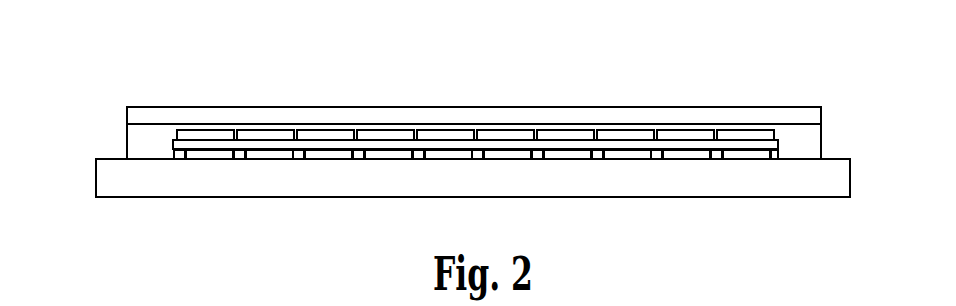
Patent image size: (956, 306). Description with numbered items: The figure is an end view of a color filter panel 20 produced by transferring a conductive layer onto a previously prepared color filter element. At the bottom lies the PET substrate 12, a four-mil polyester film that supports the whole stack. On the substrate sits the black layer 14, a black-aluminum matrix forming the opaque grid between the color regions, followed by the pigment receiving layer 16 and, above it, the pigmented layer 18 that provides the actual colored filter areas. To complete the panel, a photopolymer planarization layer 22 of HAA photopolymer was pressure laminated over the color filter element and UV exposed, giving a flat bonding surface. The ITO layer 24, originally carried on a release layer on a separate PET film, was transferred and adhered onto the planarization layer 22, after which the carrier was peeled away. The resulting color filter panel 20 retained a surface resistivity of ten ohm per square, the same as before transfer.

The PET substrate 12 is at (147, 182).
The black layer 14 is at (653, 155).
The pigment receiving layer 16 is at (773, 143).
The pigmented layer 18 is at (755, 136).
The color filter panel 20 is at (265, 75).
The photopolymer planarization layer 22 is at (147, 142).
The ITO layer 24 is at (369, 115).